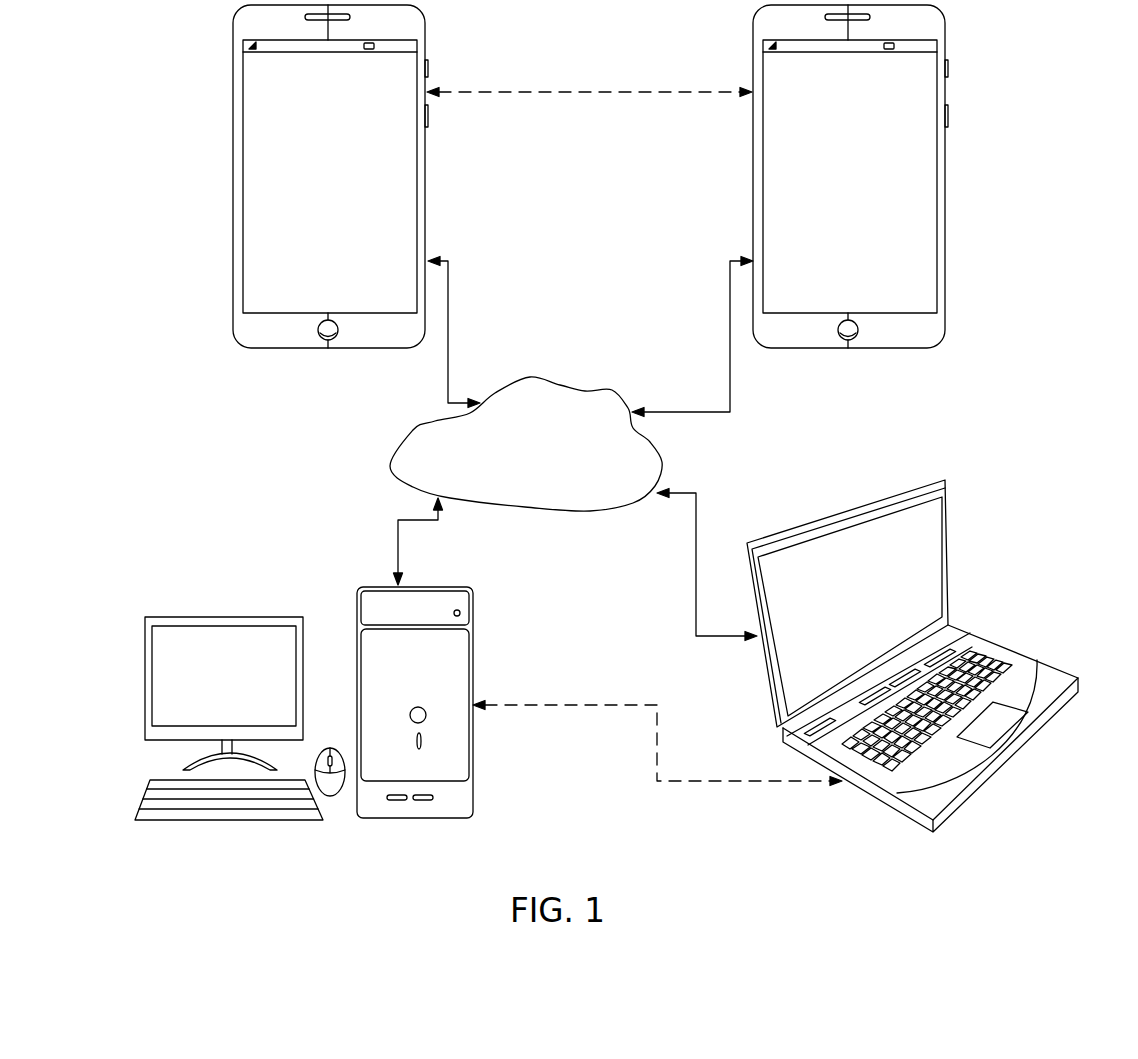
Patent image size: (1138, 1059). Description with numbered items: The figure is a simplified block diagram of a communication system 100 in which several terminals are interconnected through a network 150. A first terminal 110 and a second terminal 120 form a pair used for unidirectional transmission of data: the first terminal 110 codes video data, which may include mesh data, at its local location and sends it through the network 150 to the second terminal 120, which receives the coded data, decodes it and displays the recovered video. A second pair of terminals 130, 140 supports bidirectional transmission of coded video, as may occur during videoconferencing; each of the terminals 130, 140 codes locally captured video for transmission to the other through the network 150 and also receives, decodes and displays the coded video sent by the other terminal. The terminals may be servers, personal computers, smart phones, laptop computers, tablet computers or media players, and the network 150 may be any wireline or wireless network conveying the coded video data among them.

The communication system 100 is at (162, 70).
The first terminal 110 is at (948, 532).
The second terminal 120 is at (475, 784).
The terminal 130 is at (298, 176).
The terminal 140 is at (752, 117).
The network 150 is at (509, 441).